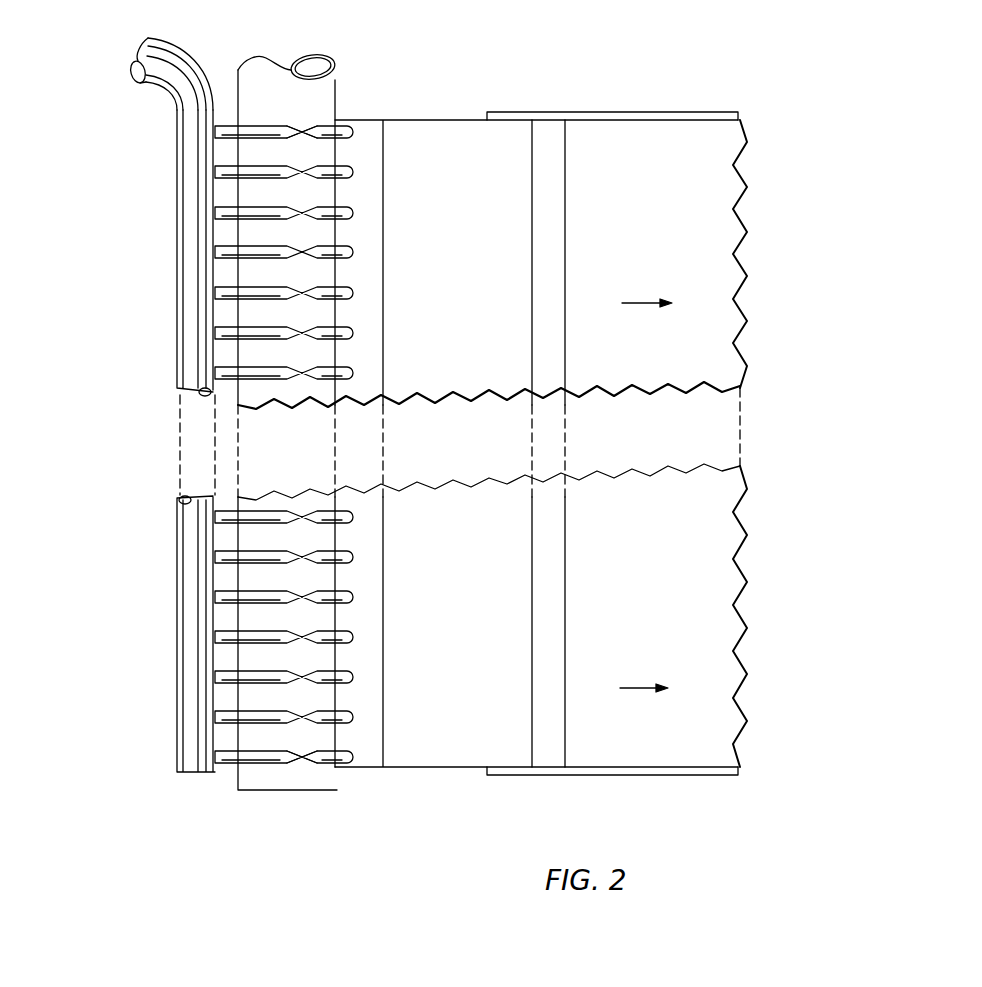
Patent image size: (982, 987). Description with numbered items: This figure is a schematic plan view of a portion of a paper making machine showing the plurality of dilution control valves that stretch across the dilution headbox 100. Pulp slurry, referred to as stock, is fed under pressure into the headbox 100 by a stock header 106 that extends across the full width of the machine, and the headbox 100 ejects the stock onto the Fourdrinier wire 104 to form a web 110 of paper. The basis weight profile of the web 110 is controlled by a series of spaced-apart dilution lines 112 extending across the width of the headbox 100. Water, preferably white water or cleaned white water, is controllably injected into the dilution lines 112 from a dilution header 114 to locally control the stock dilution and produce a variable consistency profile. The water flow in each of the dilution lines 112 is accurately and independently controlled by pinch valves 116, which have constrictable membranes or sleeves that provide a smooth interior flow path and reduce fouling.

The dilution headbox 100 is at (405, 793).
The Fourdrinier wire 104 is at (703, 112).
The stock header 106 is at (336, 64).
The web of paper 110 is at (675, 247).
The dilution lines 112 is at (230, 376).
The dilution header 114 is at (178, 168).
The pinch valves 116 is at (301, 127).